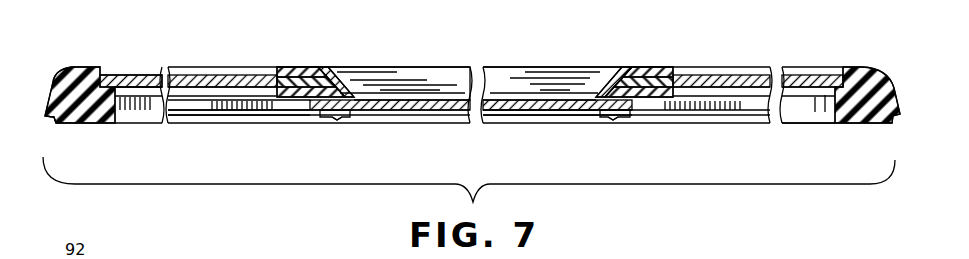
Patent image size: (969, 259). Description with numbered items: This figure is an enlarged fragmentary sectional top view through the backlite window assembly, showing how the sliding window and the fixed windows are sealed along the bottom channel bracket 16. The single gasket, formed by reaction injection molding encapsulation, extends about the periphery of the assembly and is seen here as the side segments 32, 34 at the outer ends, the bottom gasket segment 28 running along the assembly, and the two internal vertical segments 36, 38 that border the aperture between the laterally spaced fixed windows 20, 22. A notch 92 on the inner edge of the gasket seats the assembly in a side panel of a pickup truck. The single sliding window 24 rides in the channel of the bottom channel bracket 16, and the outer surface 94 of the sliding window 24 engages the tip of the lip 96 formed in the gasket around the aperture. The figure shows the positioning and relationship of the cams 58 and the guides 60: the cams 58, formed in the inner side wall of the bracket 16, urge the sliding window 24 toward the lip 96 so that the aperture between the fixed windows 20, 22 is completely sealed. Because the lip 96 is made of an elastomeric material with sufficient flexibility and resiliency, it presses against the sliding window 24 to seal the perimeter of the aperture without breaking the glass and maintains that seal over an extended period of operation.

The bottom channel bracket 16 is at (197, 110).
The fixed window 20 is at (143, 80).
The fixed window 22 is at (747, 82).
The sliding window 24 is at (537, 110).
The bottom gasket segment 28 is at (407, 78).
The side segment 32 is at (77, 70).
The side segment 34 is at (887, 72).
The internal vertical segment 36 is at (322, 68).
The internal vertical segment 38 is at (650, 70).
The cam 58 is at (337, 119).
The guide 60 is at (325, 117).
The notch 92 is at (48, 122).
The outer surface 94 is at (513, 103).
The lip 96 is at (347, 97).